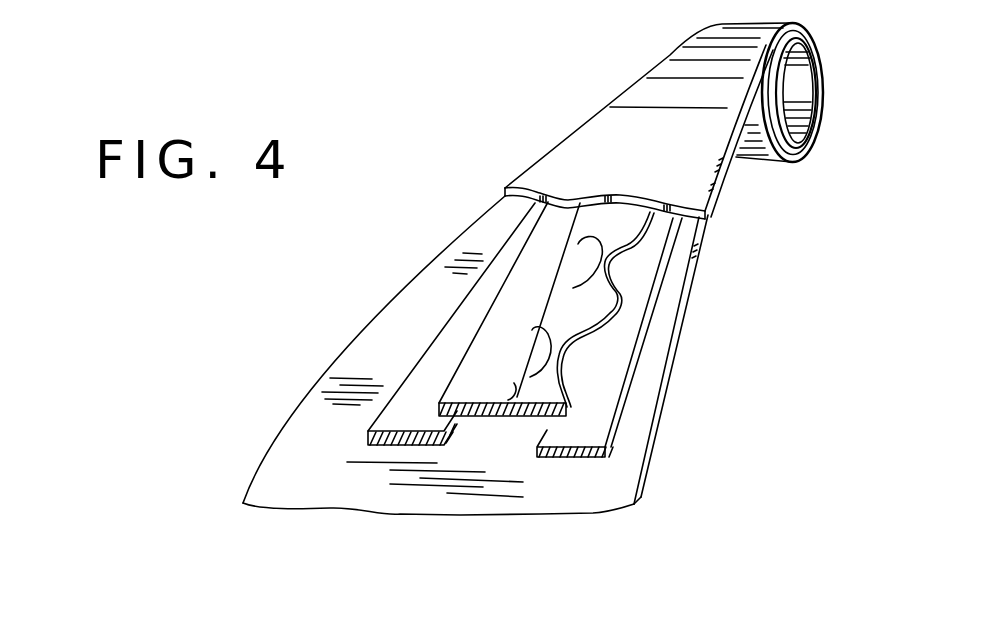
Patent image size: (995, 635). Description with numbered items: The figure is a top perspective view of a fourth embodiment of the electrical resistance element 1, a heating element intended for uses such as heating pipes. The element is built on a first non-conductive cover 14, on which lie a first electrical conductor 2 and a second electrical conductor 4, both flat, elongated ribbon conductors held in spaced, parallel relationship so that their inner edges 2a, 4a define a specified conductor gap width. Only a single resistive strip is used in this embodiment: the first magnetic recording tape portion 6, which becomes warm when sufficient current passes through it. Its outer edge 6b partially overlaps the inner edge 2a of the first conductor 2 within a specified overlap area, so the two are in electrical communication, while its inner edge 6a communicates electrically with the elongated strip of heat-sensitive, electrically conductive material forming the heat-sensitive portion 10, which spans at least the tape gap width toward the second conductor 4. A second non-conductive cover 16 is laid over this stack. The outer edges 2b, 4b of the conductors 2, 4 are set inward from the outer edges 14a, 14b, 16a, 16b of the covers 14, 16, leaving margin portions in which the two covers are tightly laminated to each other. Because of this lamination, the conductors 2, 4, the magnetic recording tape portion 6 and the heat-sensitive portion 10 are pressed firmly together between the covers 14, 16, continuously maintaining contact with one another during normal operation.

The electrical resistance element 1 is at (345, 283).
The first electrical conductor 2 is at (393, 422).
The inner edge of first electrical conductor 2a is at (424, 448).
The outer edge of first electrical conductor 2b is at (407, 381).
The second electrical conductor 4 is at (591, 403).
The inner edge of second electrical conductor 4a is at (540, 432).
The outer edge of second electrical conductor 4b is at (600, 450).
The first magnetic recording tape portion 6 is at (524, 284).
The inner edge of first magnetic recording tape portion 6a is at (493, 416).
The outer edge of first magnetic recording tape portion 6b is at (460, 348).
The heat-sensitive portion 10 is at (590, 307).
The first non-conductive cover 14 is at (624, 463).
The outer edge of first cover 14a is at (272, 447).
The outer edge of first cover 14b is at (641, 496).
The second non-conductive cover 16 is at (620, 100).
The outer edge of second cover 16a is at (582, 124).
The outer edge of second cover 16b is at (733, 137).